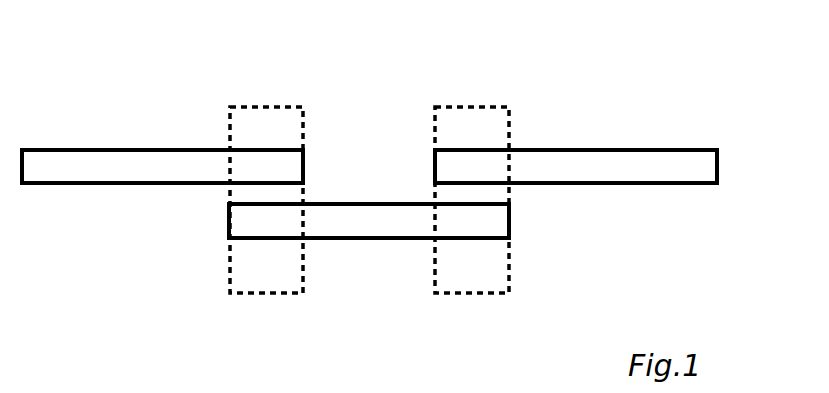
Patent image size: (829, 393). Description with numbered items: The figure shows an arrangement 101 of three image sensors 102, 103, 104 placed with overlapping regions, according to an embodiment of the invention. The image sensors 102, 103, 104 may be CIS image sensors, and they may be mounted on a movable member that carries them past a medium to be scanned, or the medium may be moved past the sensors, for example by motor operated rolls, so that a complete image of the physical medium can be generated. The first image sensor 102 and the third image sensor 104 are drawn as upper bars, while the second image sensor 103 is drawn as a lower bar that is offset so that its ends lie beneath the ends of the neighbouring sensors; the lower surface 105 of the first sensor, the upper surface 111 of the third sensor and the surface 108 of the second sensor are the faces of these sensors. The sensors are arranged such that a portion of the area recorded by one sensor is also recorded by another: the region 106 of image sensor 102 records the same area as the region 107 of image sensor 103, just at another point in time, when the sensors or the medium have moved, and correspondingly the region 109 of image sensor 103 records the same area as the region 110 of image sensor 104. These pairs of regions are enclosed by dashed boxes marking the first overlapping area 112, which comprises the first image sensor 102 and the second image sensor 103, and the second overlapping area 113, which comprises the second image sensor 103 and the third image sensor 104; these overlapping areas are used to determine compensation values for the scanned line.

The semiconductor package structure 101 is at (658, 46).
The image sensor 102 is at (162, 130).
The image sensor 103 is at (307, 276).
The image sensor 104 is at (619, 130).
The bottom surface of first lead 105 is at (165, 216).
The region 106 is at (246, 97).
The region 107 is at (245, 296).
The bottom surface of second lead 108 is at (367, 287).
The region 109 is at (452, 297).
The region 110 is at (447, 98).
The top surface of third lead (right) 111 is at (613, 113).
The first overlapping area 112 is at (303, 165).
The second overlapping area 113 is at (504, 172).